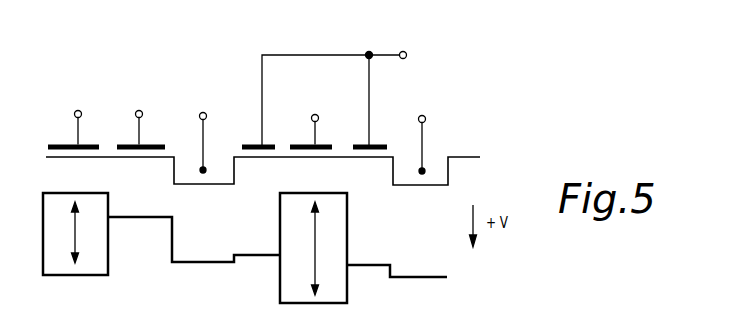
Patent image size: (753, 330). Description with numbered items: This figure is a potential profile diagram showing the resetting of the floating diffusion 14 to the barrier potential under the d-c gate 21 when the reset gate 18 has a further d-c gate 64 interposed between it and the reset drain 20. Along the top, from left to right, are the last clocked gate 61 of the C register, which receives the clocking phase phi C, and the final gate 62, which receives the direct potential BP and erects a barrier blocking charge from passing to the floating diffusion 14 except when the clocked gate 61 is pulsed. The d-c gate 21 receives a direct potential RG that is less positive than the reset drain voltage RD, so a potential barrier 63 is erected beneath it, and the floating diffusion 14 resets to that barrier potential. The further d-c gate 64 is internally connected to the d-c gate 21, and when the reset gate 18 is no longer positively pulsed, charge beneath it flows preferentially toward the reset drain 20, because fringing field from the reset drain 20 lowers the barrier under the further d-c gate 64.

The last clocked gate 61 is at (63, 144).
The final gate 62 is at (127, 144).
The floating diffusion 14 is at (215, 167).
The d-c gate 21 is at (270, 146).
The reset gate 18 is at (323, 146).
The further d-c gate 64 is at (378, 147).
The reset drain 20 is at (440, 162).
The potential barrier 63 is at (267, 258).